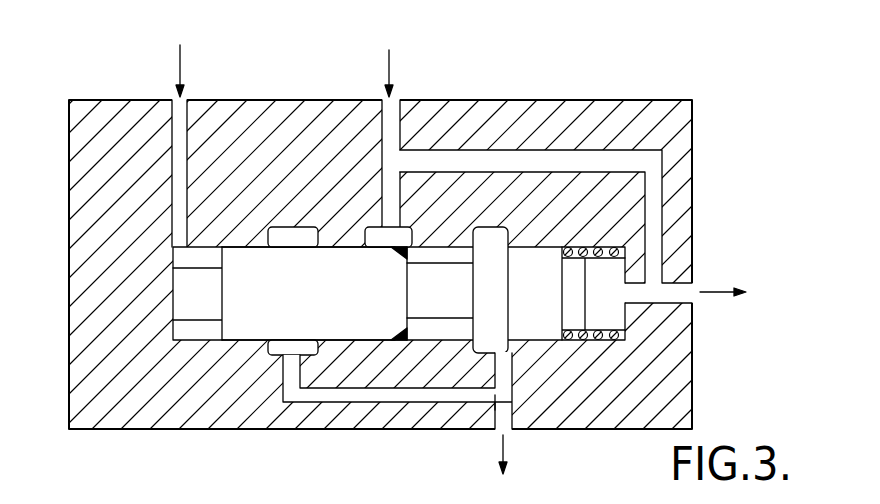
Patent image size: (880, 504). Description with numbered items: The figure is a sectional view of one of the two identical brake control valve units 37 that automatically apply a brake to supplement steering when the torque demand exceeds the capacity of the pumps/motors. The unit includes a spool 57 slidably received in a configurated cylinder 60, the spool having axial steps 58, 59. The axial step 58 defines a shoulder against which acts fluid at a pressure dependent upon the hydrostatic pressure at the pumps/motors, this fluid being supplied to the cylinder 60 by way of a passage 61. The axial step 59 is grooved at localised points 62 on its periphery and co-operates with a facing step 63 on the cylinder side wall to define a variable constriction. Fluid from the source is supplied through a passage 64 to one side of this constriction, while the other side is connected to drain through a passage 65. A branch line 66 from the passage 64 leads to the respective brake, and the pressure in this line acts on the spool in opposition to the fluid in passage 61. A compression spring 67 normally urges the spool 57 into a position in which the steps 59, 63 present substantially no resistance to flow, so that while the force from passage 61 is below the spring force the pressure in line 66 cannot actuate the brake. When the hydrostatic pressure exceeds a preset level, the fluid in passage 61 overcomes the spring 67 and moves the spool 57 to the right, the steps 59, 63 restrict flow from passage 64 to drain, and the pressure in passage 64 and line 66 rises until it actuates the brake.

The valve unit 37 is at (705, 109).
The spool 57 is at (248, 328).
The axial step 58 is at (212, 247).
The axial step 59 is at (410, 340).
The configurated cylinder 60 is at (447, 327).
The passage 61 is at (180, 166).
The localised points 62 is at (400, 252).
The facing step 63 is at (415, 233).
The passage 64 is at (385, 178).
The passage 65 is at (505, 394).
The branch line 66 is at (543, 165).
The compression spring 67 is at (612, 248).